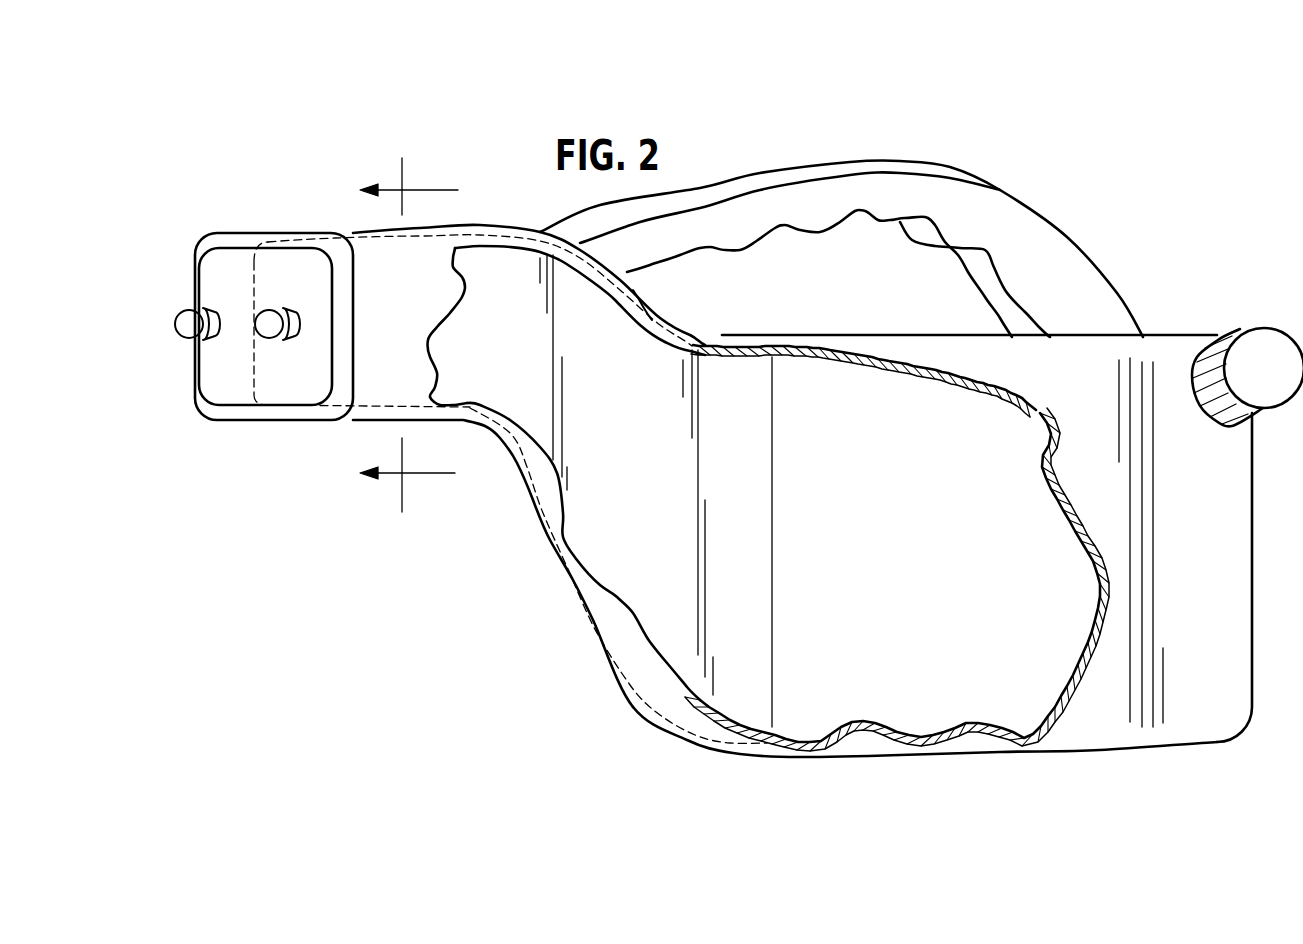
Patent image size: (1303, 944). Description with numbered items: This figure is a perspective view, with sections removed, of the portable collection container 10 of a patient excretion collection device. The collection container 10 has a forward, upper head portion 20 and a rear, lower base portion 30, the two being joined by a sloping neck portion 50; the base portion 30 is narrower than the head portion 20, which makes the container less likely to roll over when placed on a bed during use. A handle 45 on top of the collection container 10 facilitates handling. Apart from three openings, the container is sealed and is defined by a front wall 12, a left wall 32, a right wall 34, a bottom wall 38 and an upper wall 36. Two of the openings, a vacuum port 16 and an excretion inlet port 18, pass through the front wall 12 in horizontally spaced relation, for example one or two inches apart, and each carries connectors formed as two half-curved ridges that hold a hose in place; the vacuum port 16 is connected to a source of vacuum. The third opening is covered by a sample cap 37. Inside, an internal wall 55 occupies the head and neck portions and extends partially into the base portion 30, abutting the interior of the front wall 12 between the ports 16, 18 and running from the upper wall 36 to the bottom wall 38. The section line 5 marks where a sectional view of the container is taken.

The collection container 10 is at (1009, 138).
The front wall 12 is at (233, 273).
The vacuum port 16 is at (188, 310).
The excretion inlet port 18 is at (285, 310).
The head portion 20 is at (493, 100).
The base portion 30 is at (1233, 800).
The left wall 32 is at (1217, 510).
The right wall 34 is at (953, 570).
The upper wall 36 is at (1162, 337).
The sample cap 37 is at (1273, 347).
The bottom wall 38 is at (1138, 750).
The handle 45 is at (1063, 255).
The neck portion 50 is at (598, 648).
The internal wall 55 is at (677, 513).
The section line 5- 5 is at (409, 334).